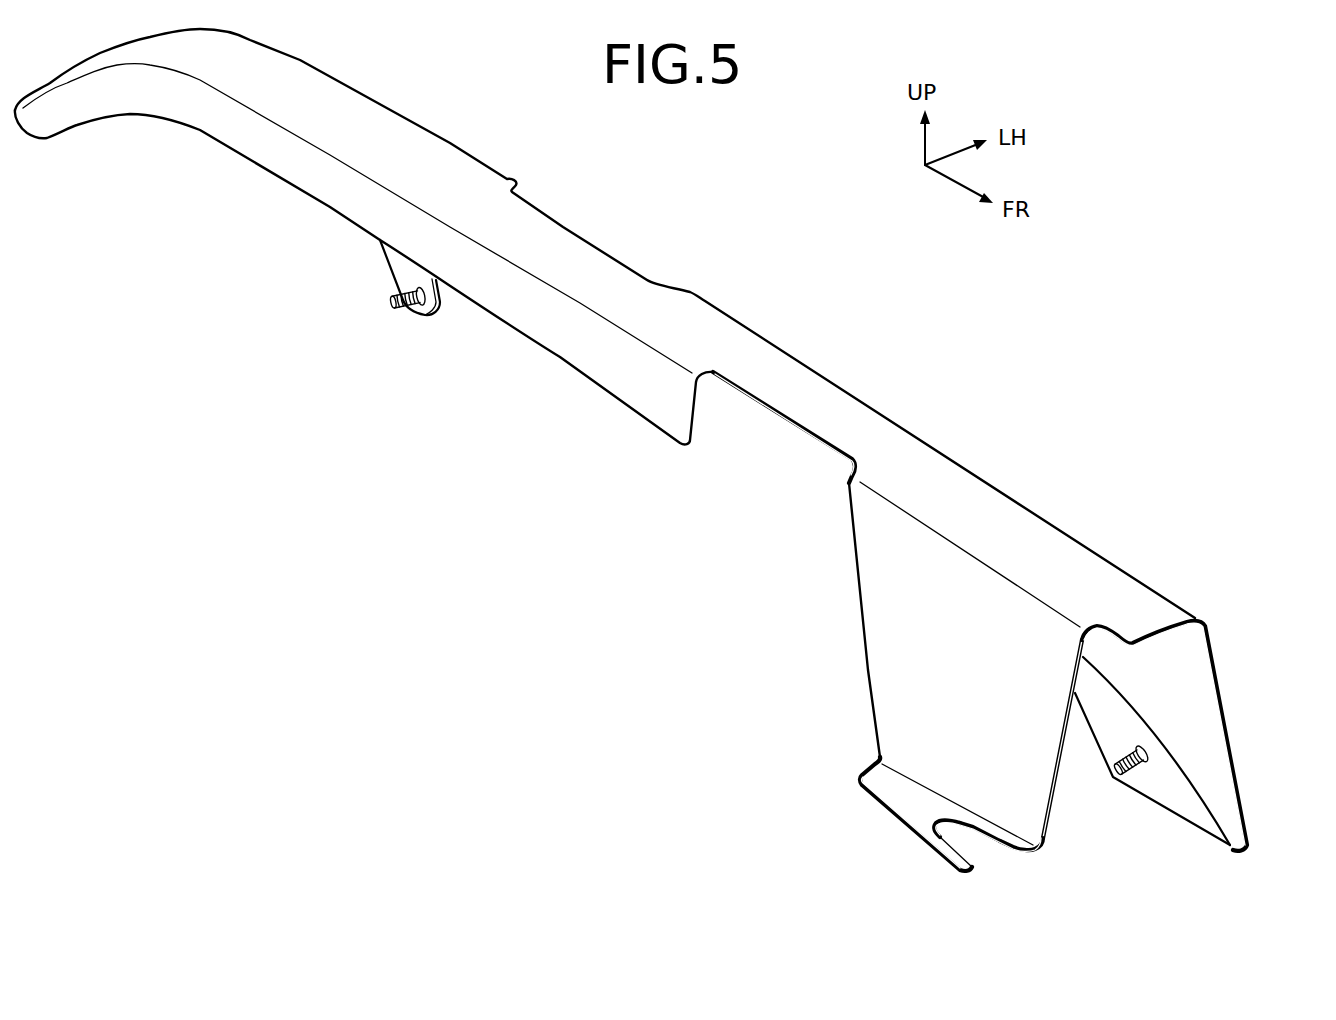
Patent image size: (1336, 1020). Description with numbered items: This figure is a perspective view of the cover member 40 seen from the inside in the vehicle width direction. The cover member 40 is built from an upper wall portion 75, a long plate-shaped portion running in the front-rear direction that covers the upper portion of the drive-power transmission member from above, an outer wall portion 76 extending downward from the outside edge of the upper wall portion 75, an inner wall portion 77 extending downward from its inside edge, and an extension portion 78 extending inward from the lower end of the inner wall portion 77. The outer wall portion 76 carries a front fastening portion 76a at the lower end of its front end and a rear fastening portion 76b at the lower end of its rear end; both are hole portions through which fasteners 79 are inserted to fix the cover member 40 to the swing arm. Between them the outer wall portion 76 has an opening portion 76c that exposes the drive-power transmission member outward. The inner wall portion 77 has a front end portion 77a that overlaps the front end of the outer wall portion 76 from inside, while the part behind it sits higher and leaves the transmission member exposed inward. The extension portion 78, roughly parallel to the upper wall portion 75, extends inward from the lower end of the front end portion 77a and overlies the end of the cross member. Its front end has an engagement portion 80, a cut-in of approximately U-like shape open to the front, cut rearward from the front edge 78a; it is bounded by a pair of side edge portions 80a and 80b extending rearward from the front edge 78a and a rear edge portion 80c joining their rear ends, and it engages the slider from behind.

The cover member 40 is at (790, 350).
The upper wall portion 75 is at (968, 512).
The outer wall portion 76 is at (1201, 745).
The front fastening portion 76a is at (1143, 770).
The rear fastening portion 76b is at (424, 322).
The opening portion 76c is at (820, 453).
The inner wall portion 77 is at (890, 691).
The front end portion 77a is at (925, 727).
The extension portion 78 is at (888, 826).
The front edge 78a is at (970, 870).
The fastener 79 is at (391, 301).
The engagement portion 80 is at (1001, 884).
The side edge portion 80a is at (1003, 850).
The side edge portion 80b is at (973, 843).
The rear edge portion 80c is at (940, 838).